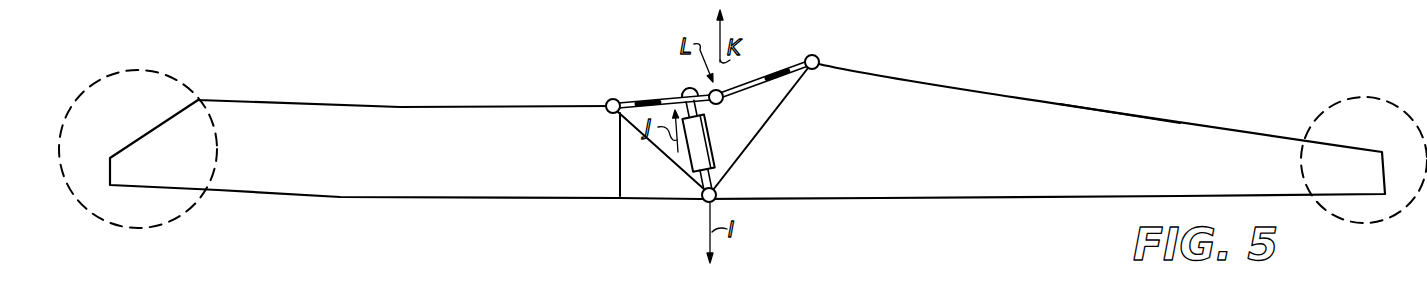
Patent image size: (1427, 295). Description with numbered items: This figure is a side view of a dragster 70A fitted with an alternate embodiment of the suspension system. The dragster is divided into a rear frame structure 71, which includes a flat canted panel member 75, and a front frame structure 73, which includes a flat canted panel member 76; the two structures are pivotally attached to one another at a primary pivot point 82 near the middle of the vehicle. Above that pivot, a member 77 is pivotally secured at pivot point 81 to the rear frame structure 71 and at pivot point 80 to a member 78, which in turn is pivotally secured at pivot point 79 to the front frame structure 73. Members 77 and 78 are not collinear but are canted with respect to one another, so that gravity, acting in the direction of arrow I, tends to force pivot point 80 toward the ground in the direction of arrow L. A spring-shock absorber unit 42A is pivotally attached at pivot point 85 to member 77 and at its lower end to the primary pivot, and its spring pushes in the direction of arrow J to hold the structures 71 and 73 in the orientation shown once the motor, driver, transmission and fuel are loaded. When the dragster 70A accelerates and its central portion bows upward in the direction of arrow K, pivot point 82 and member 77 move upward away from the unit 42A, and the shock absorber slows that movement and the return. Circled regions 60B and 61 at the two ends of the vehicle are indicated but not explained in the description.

The inboard wing tip detail region 60B is at (195, 93).
The outboard wing tip detail region 61 is at (1338, 100).
The rear frame structure 71 is at (399, 96).
The dragster 70A is at (919, 76).
The front frame structure 73 is at (1125, 106).
The flat canted panel member 75 is at (620, 124).
The flat canted panel member 76 is at (779, 108).
The member 77 is at (632, 100).
The member 78 is at (761, 72).
The pivot point 79 is at (819, 57).
The pivot point 80 is at (723, 100).
The pivot point 81 is at (611, 99).
The pivot point 82 is at (684, 214).
The pivot point 85 is at (683, 93).
The spring-shock absorber unit 42A is at (719, 138).